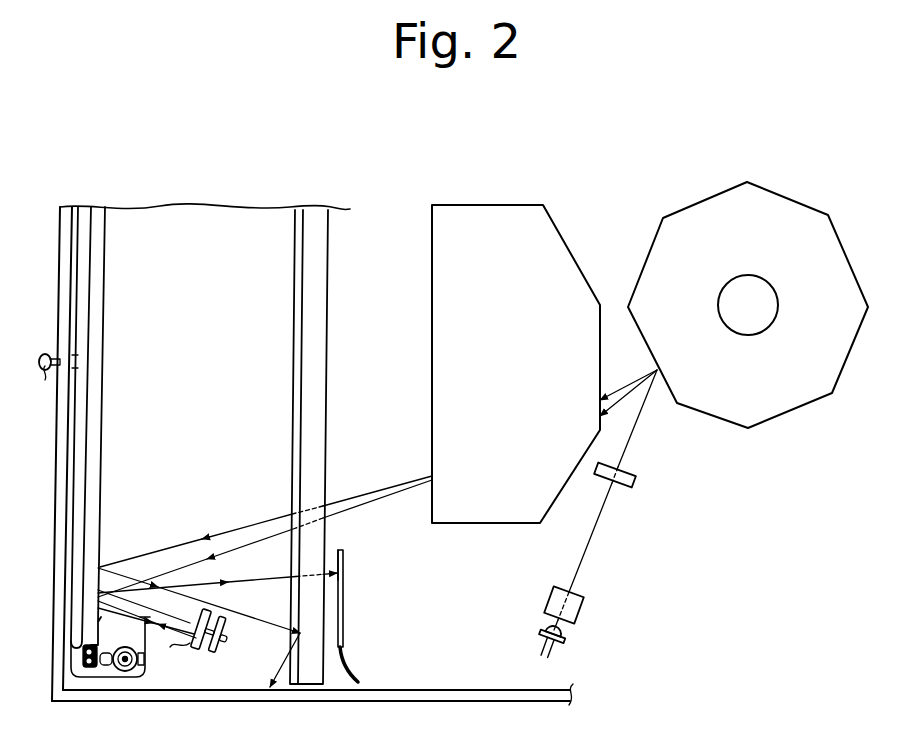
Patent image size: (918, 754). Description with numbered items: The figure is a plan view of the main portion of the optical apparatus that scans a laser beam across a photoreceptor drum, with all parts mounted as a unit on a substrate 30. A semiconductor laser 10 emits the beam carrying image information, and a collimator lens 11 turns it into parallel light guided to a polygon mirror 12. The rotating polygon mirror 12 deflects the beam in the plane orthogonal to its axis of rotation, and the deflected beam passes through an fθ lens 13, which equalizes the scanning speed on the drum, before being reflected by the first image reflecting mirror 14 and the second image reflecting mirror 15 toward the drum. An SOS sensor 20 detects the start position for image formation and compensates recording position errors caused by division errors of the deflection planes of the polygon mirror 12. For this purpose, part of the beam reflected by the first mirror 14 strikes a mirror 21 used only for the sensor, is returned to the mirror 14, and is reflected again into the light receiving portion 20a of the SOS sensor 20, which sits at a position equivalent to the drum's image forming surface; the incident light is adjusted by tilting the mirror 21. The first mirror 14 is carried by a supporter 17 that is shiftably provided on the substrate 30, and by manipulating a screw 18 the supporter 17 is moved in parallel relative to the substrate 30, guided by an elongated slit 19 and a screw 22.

The semiconductor laser 10 is at (566, 640).
The collimator lens 11 is at (584, 608).
The polygon mirror 12 is at (710, 424).
The fθ lens 13 is at (519, 204).
The first image reflecting mirror 14 is at (103, 378).
The second image reflecting mirror 15 is at (294, 362).
The supporter 17 is at (143, 678).
The screw 18 is at (43, 377).
The elongated slit 19 is at (103, 665).
The SOS sensor 20 is at (346, 597).
The light receiving portion 20a is at (336, 568).
The mirror for the sensor 21 is at (193, 643).
The screw 22 is at (123, 672).
The substrate 30 is at (440, 692).